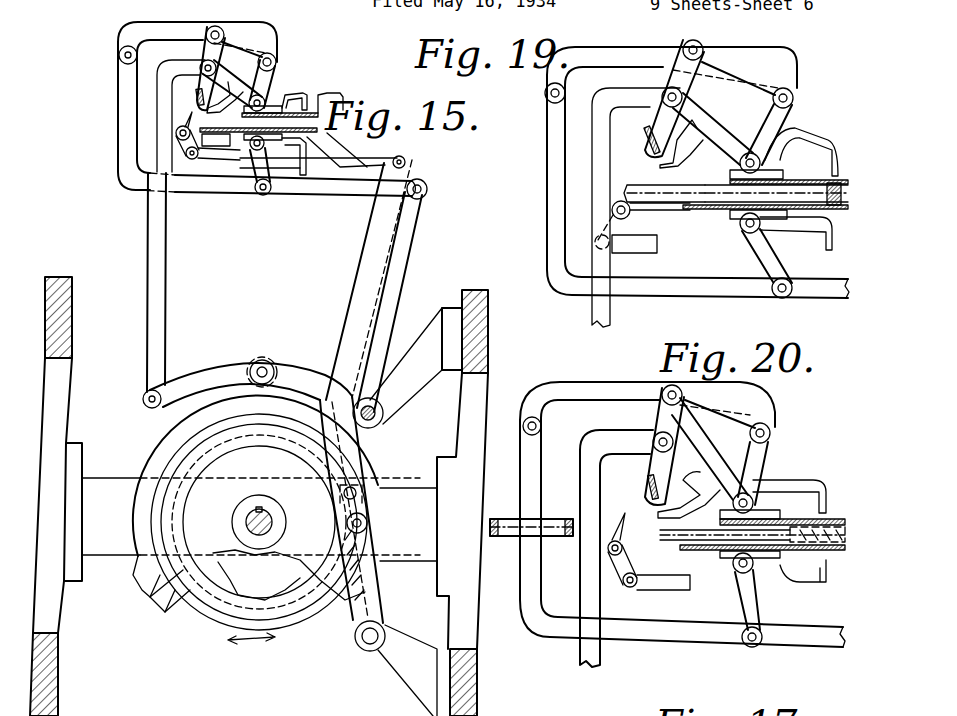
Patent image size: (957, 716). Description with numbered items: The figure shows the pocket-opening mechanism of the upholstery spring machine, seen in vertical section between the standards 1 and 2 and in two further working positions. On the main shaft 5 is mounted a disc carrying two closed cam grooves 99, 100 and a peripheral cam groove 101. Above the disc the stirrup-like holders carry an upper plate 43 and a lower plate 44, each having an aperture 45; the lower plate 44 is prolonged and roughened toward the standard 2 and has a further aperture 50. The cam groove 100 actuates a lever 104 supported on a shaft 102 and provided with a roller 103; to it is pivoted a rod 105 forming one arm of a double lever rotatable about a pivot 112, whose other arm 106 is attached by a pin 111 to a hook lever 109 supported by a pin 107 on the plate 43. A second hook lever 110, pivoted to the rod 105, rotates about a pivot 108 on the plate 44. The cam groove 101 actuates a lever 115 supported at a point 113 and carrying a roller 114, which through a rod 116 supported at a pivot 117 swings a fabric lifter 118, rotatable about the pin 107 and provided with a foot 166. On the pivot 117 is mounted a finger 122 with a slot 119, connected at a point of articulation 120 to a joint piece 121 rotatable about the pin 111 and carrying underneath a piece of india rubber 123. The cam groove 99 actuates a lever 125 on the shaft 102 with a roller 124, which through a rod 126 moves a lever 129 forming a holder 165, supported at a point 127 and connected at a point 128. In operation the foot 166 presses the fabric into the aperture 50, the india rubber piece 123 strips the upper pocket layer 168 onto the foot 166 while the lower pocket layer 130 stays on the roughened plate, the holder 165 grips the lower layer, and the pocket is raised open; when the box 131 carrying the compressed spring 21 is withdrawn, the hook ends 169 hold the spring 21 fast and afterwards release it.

In FIG. 15, the standard 1 is at (478, 393).
In FIG. 15, the standard 2 is at (70, 377).
In FIG. 15, the main shaft 5 is at (247, 522).
In FIG. 19, the spring 21 is at (838, 168).
In FIG. 20, the spring 21 is at (836, 558).
In FIG. 15, the upper plate 43 is at (320, 123).
In FIG. 20, the upper plate 43 is at (842, 520).
In FIG. 15, the lower plate 44 is at (292, 155).
In FIG. 20, the lower plate 44 is at (825, 555).
In FIG. 15, the aperture 45 is at (322, 159).
In FIG. 20, the aperture 45 is at (812, 536).
In FIG. 15, the aperture 50 is at (220, 147).
In FIG. 15, the cam groove 99 is at (240, 605).
In FIG. 15, the cam groove 100 is at (170, 600).
In FIG. 15, the peripheral cam groove 101 is at (158, 437).
In FIG. 15, the shaft 102 is at (368, 640).
In FIG. 15, the roller 103 is at (368, 522).
In FIG. 15, the lever 104 is at (420, 212).
In FIG. 15, the rod 105 is at (145, 192).
In FIG. 20, the rod 105 is at (531, 470).
In FIG. 15, the arm 106 is at (140, 22).
In FIG. 19, the arm 106 is at (618, 56).
In FIG. 20, the arm 106 is at (551, 380).
In FIG. 15, the pin 107 is at (260, 100).
In FIG. 20, the pin 107 is at (752, 495).
In FIG. 15, the pivot 108 is at (193, 161).
In FIG. 20, the pivot 108 is at (735, 570).
In FIG. 15, the hook lever 109 is at (276, 98).
In FIG. 20, the hook lever 109 is at (758, 455).
In FIG. 15, the hook lever 110 is at (257, 175).
In FIG. 15, the pin 111 is at (275, 62).
In FIG. 20, the pin 111 is at (765, 430).
In FIG. 15, the pivot 112 is at (121, 50).
In FIG. 20, the pivot 112 is at (541, 424).
In FIG. 15, the support point 113 is at (383, 418).
In FIG. 15, the roller 114 is at (270, 363).
In FIG. 15, the lever 115 is at (206, 376).
In FIG. 15, the rod 116 is at (163, 287).
In FIG. 20, the rod 116 is at (582, 646).
In FIG. 15, the pivot 117 is at (200, 70).
In FIG. 15, the fabric lifter 118 is at (242, 92).
In FIG. 19, the fabric lifter 118 is at (723, 130).
In FIG. 20, the fabric lifter 118 is at (705, 465).
In FIG. 15, the slot 119 is at (197, 80).
In FIG. 20, the slot 119 is at (658, 460).
In FIG. 15, the point of articulation 120 is at (219, 30).
In FIG. 20, the point of articulation 120 is at (665, 386).
In FIG. 15, the joint piece 121 is at (240, 46).
In FIG. 19, the joint piece 121 is at (753, 83).
In FIG. 20, the joint piece 121 is at (728, 412).
In FIG. 15, the finger 122 is at (208, 52).
In FIG. 20, the finger 122 is at (660, 420).
In FIG. 15, the india rubber piece 123 is at (200, 108).
In FIG. 19, the india rubber piece 123 is at (648, 148).
In FIG. 20, the india rubber piece 123 is at (648, 497).
In FIG. 15, the roller 124 is at (345, 482).
In FIG. 15, the lever 125 is at (409, 183).
In FIG. 15, the rod 126 is at (255, 148).
In FIG. 20, the rod 126 is at (660, 585).
In FIG. 15, the support point 127 is at (140, 182).
In FIG. 15, the connection point 128 is at (193, 161).
In FIG. 15, the lever 129 is at (183, 142).
In FIG. 20, the lever 129 is at (622, 565).
In FIG. 19, the lower pocket layer 130 is at (650, 205).
In FIG. 20, the lower pocket layer 130 is at (797, 548).
In FIG. 19, the box 131 is at (618, 180).
In FIG. 20, the box 131 is at (498, 540).
In FIG. 15, the holder 165 is at (187, 128).
In FIG. 20, the holder 165 is at (615, 542).
In FIG. 15, the foot 166 is at (210, 115).
In FIG. 19, the foot 166 is at (680, 165).
In FIG. 20, the foot 166 is at (672, 512).
In FIG. 19, the upper pocket layer 168 is at (700, 182).
In FIG. 20, the upper pocket layer 168 is at (798, 530).
In FIG. 15, the hook ends 169 is at (300, 103).
In FIG. 19, the hook ends 169 is at (792, 153).
In FIG. 20, the hook ends 169 is at (826, 480).